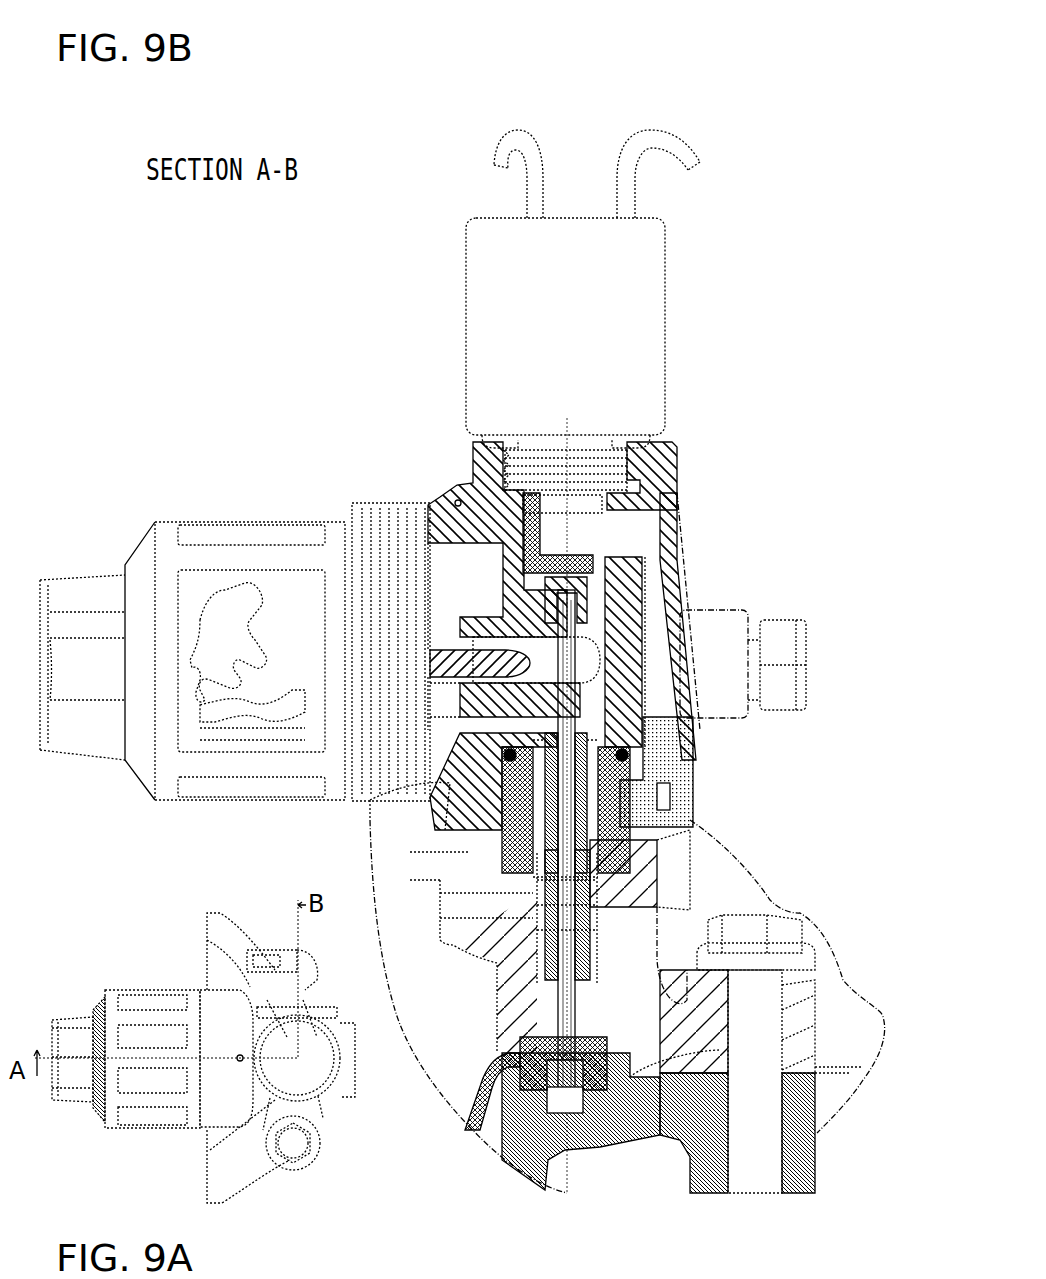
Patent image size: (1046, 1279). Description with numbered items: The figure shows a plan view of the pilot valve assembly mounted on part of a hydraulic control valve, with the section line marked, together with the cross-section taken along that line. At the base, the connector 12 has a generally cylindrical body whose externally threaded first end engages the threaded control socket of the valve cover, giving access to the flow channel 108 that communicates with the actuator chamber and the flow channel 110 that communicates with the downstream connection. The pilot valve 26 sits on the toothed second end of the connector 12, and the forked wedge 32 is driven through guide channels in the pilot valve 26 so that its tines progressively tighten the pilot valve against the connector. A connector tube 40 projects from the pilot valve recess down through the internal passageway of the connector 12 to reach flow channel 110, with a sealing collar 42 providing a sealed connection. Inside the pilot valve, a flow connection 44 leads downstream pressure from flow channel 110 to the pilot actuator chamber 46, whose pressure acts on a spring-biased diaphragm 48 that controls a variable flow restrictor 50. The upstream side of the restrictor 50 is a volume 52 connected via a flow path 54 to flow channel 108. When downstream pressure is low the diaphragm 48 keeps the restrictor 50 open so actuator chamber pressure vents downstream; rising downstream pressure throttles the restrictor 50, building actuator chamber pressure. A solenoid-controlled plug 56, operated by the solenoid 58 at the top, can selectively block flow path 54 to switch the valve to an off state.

The connector 12 is at (630, 770).
The pilot valve 26 is at (455, 497).
The forked wedge 32 is at (688, 800).
The connector tube 40 is at (593, 838).
The sealing collar 42 is at (590, 875).
The flow connection 44 is at (558, 788).
The pilot actuator chamber 46 is at (470, 775).
The spring-biased diaphragm 48 is at (423, 595).
The variable flow restrictor 50 is at (468, 647).
The volume 52 is at (578, 660).
The flow path 54 is at (640, 638).
The solenoid-controlled plug 56 is at (593, 555).
The solenoid 58 is at (620, 365).
The flow channel 108 is at (482, 910).
The flow channel 110 is at (567, 985).